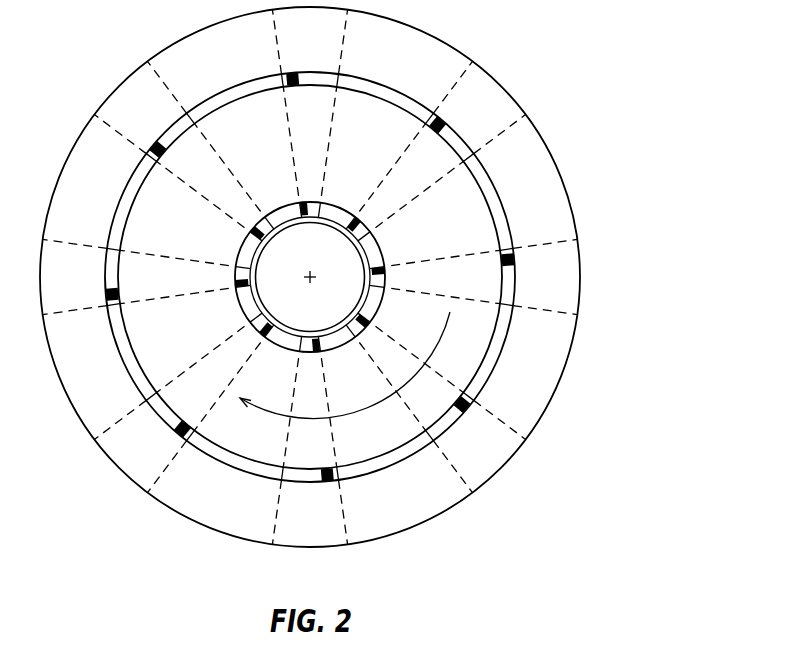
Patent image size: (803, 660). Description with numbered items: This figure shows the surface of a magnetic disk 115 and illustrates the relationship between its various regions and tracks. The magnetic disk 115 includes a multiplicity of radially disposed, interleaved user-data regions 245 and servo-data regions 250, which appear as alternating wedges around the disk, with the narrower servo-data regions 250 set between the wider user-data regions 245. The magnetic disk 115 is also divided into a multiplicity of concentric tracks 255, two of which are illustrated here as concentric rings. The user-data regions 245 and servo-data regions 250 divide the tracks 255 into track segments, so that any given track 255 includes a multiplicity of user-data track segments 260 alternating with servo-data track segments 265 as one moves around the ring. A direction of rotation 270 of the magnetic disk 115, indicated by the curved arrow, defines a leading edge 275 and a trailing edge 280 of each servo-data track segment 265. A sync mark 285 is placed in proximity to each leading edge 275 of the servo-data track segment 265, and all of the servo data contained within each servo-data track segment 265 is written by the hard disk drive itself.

The magnetic disk 115 is at (584, 58).
The user-data regions 245 is at (573, 217).
The servo-data regions 250 is at (578, 301).
The concentric tracks 255 is at (214, 110).
The user-data track segments 260 is at (474, 172).
The servo-data track segments 265 is at (502, 295).
The direction of rotation 270 is at (380, 403).
The leading edge 275 is at (112, 308).
The trailing edge 280 is at (120, 247).
The sync mark 285 is at (122, 288).